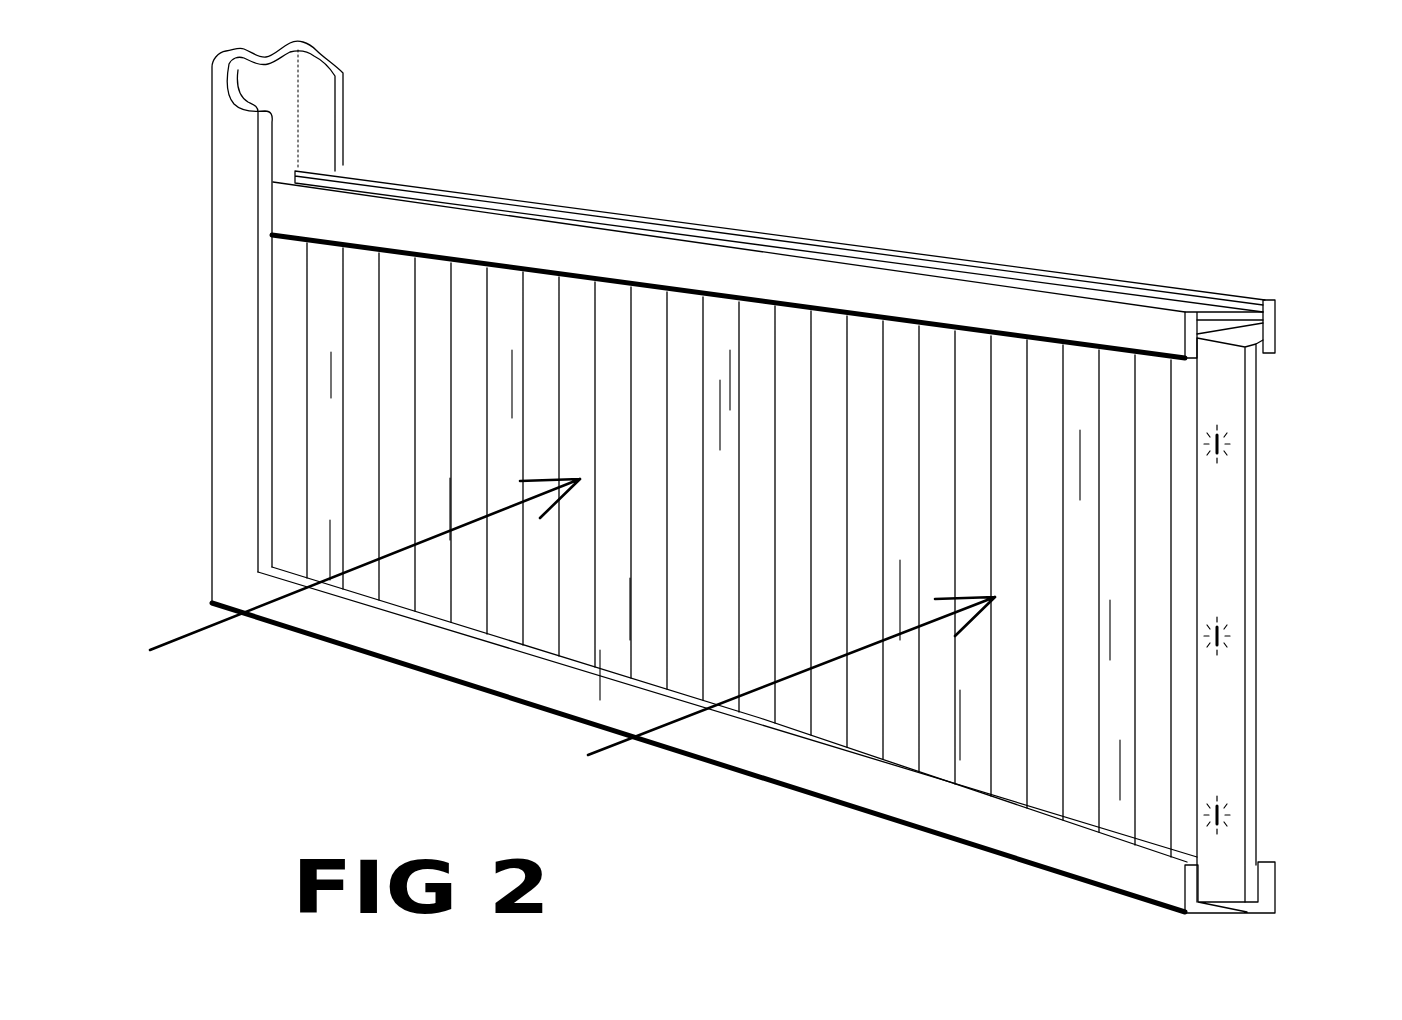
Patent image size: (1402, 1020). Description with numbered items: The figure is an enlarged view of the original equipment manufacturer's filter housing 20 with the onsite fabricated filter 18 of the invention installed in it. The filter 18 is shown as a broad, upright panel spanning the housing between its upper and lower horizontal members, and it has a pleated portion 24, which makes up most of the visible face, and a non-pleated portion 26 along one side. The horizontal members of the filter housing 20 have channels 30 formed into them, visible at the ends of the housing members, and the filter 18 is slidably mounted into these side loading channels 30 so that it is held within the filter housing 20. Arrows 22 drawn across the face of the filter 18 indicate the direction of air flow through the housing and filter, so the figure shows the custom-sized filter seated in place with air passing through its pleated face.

The onsite fabricated filter 18 is at (1043, 790).
The filter housing 20 is at (825, 280).
The arrows 22 is at (212, 625).
The pleated portion 24 is at (920, 740).
The non-pleated portion 26 is at (1228, 567).
The channels 30 is at (1263, 342).